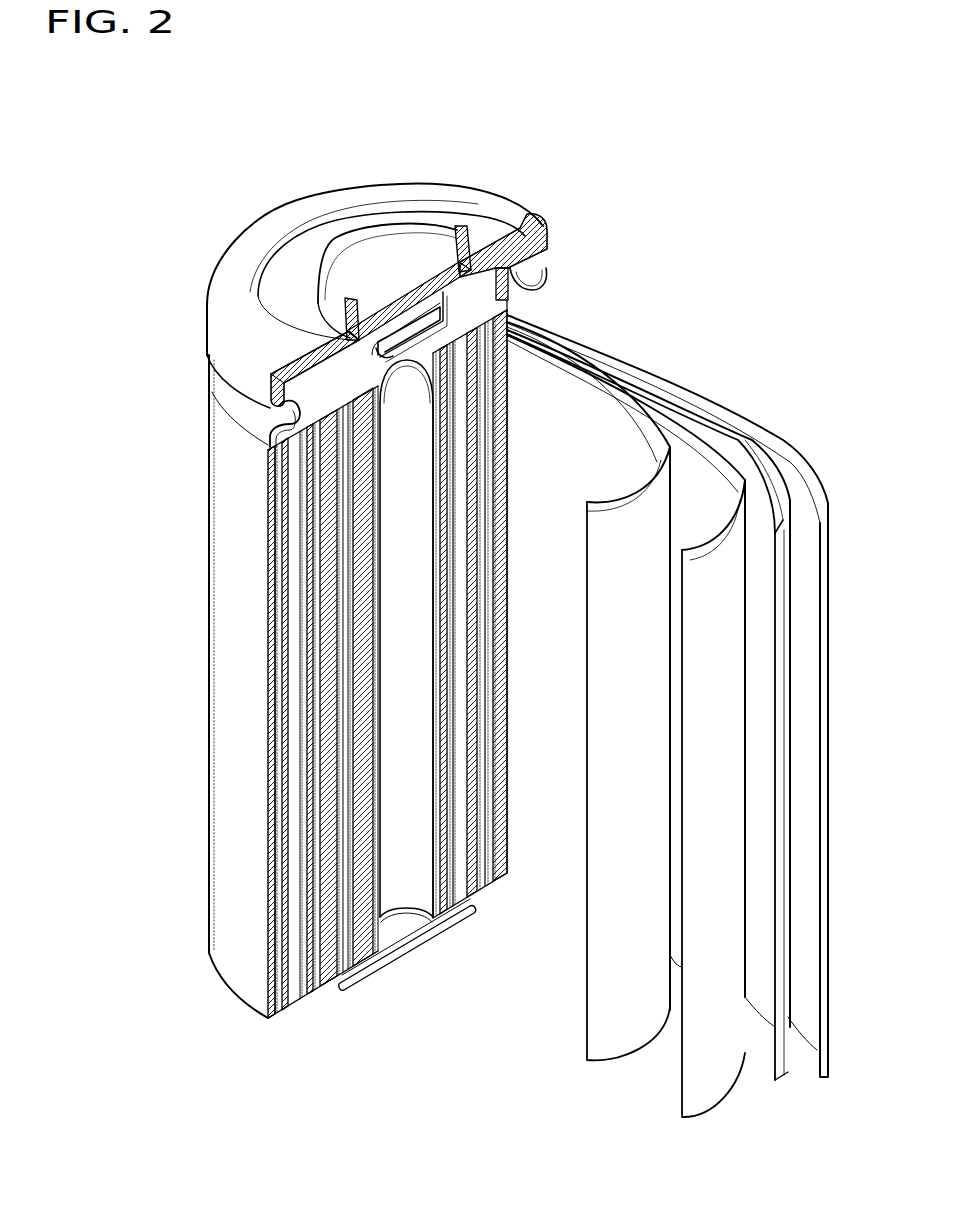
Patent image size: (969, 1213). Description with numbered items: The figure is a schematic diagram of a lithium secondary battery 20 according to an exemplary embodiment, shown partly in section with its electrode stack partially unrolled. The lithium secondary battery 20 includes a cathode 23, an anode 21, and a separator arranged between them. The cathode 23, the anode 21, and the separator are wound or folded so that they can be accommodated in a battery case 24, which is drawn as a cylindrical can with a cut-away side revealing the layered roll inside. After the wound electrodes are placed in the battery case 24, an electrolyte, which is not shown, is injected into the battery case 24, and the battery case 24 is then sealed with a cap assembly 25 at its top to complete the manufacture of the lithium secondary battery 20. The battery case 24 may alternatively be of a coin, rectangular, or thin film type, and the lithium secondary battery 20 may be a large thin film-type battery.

The lithium secondary battery 20 is at (768, 252).
The anode 21 is at (807, 472).
The cathode 23 is at (700, 437).
The battery case 24 is at (222, 685).
The cap assembly 25 is at (348, 243).